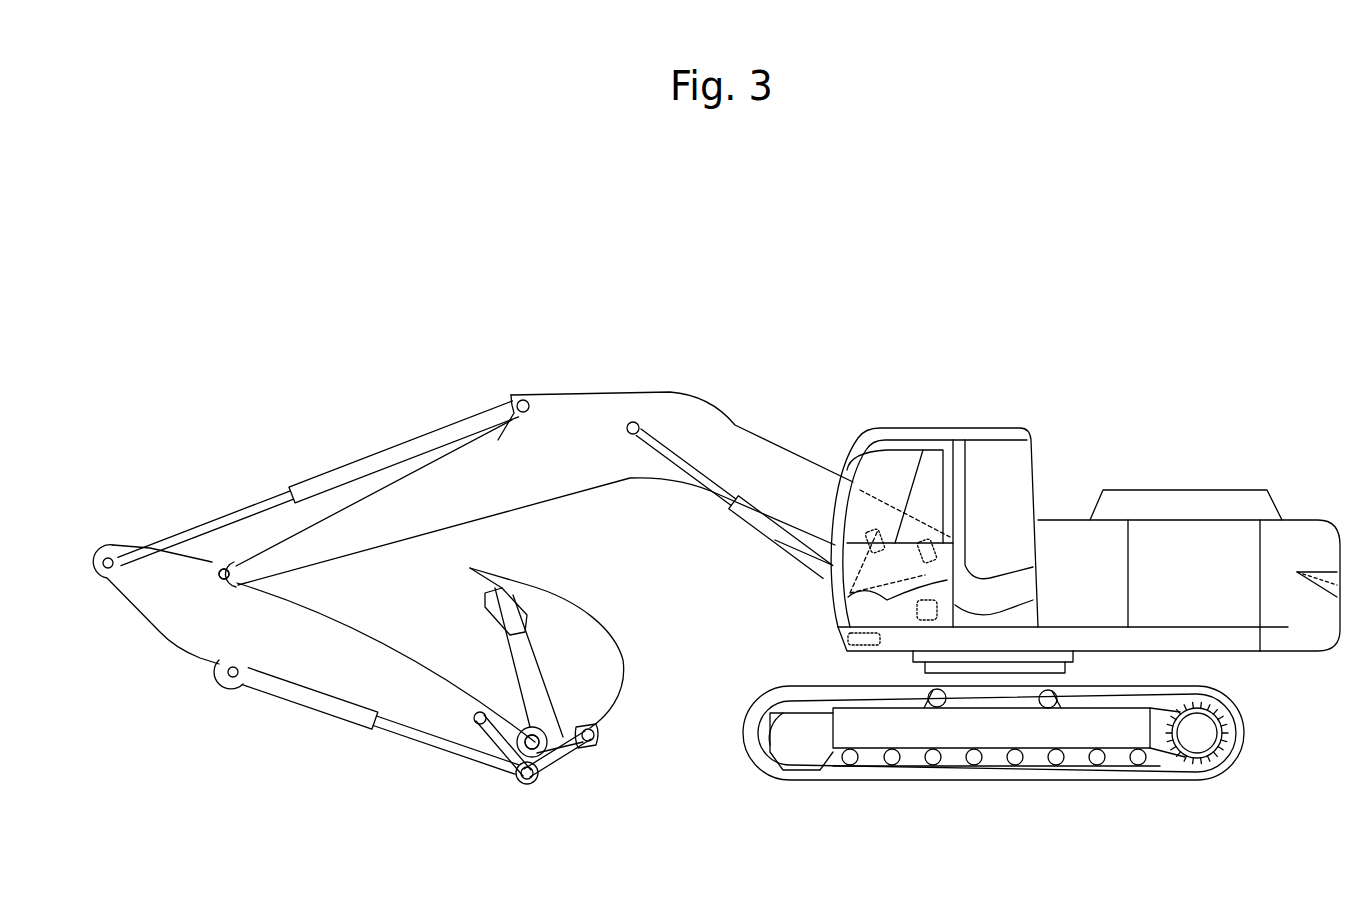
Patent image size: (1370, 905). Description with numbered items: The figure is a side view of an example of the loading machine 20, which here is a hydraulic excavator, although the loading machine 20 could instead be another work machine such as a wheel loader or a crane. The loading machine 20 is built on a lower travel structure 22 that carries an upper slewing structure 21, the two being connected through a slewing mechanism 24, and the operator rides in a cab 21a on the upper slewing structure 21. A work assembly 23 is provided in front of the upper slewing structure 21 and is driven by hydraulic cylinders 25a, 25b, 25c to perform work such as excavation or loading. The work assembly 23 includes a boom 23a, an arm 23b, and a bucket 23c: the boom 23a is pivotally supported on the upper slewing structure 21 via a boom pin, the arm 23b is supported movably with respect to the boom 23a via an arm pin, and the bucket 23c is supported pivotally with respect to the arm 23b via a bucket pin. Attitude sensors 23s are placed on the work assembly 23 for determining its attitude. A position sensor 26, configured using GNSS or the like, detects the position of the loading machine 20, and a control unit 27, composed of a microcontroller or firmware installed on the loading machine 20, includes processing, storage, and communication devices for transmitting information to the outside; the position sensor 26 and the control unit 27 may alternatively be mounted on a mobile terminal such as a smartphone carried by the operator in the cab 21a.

The loading machine 20 is at (1093, 297).
The upper slewing structure 21 is at (1262, 480).
The cab 21a is at (993, 428).
The lower travel structure 22 is at (1248, 703).
The work assembly 23 is at (440, 392).
The boom 23a is at (681, 405).
The arm 23b is at (313, 657).
The bucket 23c is at (578, 610).
The attitude sensor 23s is at (223, 563).
The slewing mechanism 24 is at (897, 668).
The hydraulic cylinder 25a is at (768, 552).
The hydraulic cylinder 25b is at (358, 453).
The hydraulic cylinder 25c is at (352, 738).
The position sensor 26 is at (847, 640).
The control unit 27 is at (965, 628).